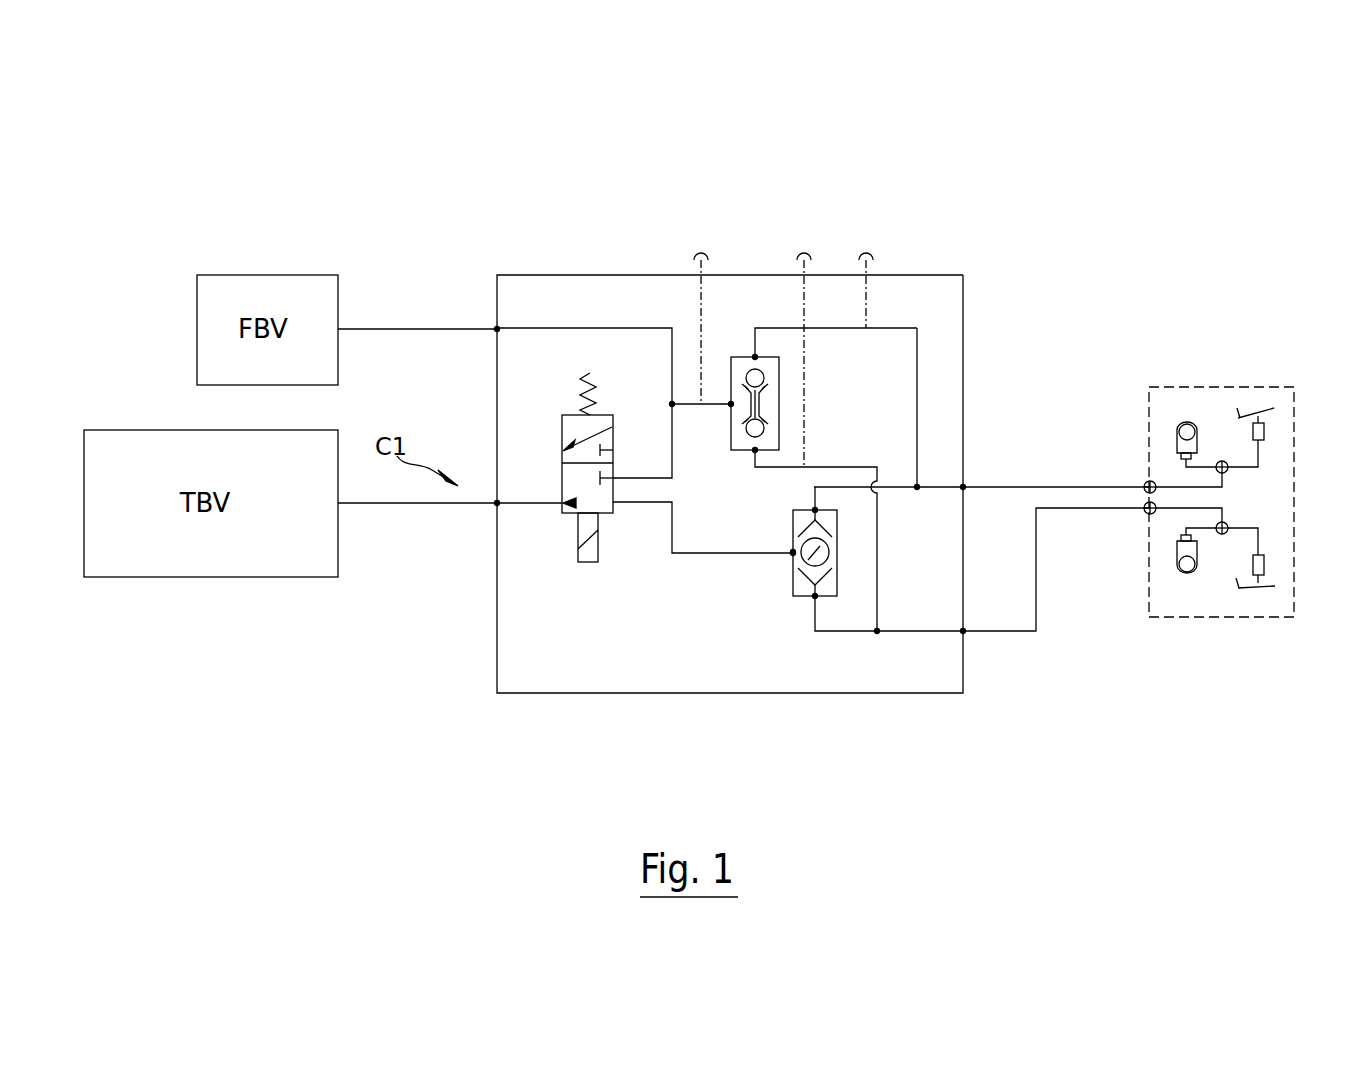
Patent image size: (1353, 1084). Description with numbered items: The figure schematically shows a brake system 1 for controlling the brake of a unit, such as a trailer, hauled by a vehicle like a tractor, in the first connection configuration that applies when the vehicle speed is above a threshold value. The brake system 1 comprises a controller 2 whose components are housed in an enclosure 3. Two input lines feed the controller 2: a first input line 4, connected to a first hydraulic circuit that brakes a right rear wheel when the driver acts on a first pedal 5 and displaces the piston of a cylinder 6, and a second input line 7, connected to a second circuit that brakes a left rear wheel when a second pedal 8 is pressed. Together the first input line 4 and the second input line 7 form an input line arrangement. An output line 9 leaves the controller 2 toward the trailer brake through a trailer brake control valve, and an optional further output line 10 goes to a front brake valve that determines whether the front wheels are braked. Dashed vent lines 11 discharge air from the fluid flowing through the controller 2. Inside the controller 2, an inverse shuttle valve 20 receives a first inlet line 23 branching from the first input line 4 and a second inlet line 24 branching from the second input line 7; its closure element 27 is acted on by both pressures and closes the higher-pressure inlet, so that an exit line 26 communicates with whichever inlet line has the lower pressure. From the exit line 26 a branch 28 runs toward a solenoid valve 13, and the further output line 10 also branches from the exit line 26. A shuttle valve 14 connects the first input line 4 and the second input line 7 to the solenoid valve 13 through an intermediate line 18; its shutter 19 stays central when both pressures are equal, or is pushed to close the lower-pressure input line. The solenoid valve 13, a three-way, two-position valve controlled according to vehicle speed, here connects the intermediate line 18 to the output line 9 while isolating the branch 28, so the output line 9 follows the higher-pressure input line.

The brake system 1 is at (1176, 153).
The controller 2 is at (563, 693).
The enclosure 3 is at (880, 693).
The first input line 4 is at (940, 487).
The first pedal 5 is at (1265, 410).
The cylinder 6 is at (1250, 438).
The second input line 7 is at (923, 631).
The second pedal 8 is at (1263, 588).
The output line 9 is at (517, 507).
The further output line 10 is at (549, 328).
The vent lines 11 is at (693, 285).
The solenoid valve 13 is at (563, 514).
The shuttle valve 14 is at (837, 548).
The intermediate line 18 is at (700, 554).
The shutter 19 is at (801, 600).
The inverse shuttle valve 20 is at (779, 375).
The first inlet line 23 is at (917, 380).
The second inlet line 24 is at (862, 467).
The exit line 26 is at (685, 400).
The closure element 27 is at (755, 357).
The branch 28 is at (672, 450).